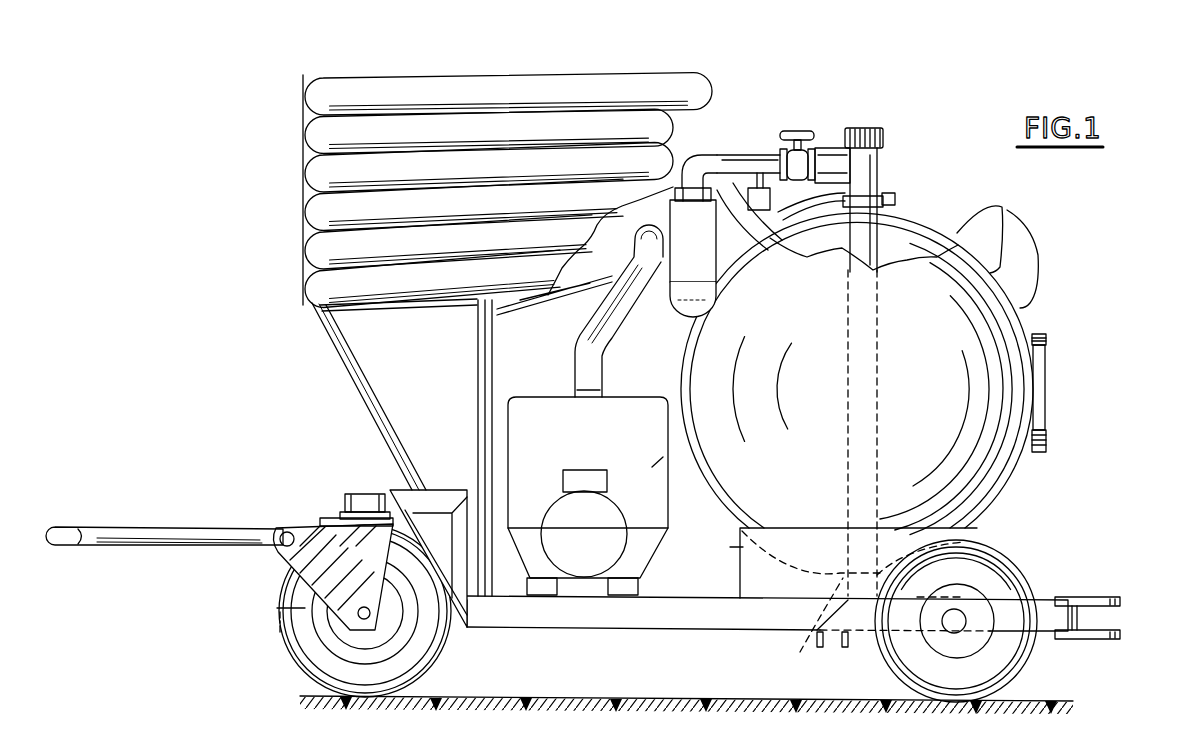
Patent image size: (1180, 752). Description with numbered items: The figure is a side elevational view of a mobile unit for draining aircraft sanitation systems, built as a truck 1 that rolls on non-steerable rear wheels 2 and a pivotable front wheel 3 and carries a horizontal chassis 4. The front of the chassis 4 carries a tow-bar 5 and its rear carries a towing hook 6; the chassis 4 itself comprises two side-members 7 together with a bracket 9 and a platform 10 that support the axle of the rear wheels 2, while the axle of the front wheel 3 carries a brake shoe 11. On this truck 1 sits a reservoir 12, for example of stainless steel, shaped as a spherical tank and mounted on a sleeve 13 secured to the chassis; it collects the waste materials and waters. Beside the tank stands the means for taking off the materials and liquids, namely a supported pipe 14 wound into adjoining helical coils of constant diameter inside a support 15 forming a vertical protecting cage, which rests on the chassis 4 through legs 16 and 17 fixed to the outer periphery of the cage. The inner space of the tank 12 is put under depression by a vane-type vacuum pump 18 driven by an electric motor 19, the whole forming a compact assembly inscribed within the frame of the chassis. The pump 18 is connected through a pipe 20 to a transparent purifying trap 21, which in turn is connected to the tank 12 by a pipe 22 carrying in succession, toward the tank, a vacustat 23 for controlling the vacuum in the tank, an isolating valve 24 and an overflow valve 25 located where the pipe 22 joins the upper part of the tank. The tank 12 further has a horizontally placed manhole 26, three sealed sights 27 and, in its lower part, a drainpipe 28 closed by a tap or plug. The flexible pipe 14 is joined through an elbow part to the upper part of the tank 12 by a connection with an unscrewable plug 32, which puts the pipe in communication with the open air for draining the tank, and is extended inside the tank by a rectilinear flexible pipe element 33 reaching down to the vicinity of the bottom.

The truck 1 is at (256, 587).
The rear wheels 2 is at (1013, 572).
The front wheel 3 is at (312, 664).
The chassis 4 is at (590, 632).
The tow-bar 5 is at (198, 530).
The towing hook 6 is at (1093, 600).
The side-members 7 is at (650, 625).
The bracket 9 is at (430, 500).
The platform 10 is at (1062, 620).
The brake shoe 11 is at (278, 628).
The reservoir 12 is at (1010, 470).
The sleeve 13 is at (740, 547).
The pipe 14 is at (408, 90).
The support 15 is at (302, 200).
The leg 16 is at (360, 385).
The leg 17 is at (483, 340).
The vacuum pump 18 is at (588, 496).
The electric motor 19 is at (600, 536).
The pipe 20 is at (630, 326).
The purifying trap 21 is at (700, 312).
The pipe 22 is at (720, 157).
The vacustat 23 is at (768, 204).
The isolating valve 24 is at (799, 125).
The overflow valve 25 is at (870, 128).
The manhole 26 is at (1047, 378).
The sealed sights 27 is at (958, 233).
The drainpipe 28 is at (820, 645).
The unscrewable plug 32 is at (882, 198).
The flexible pipe element 33 is at (870, 387).